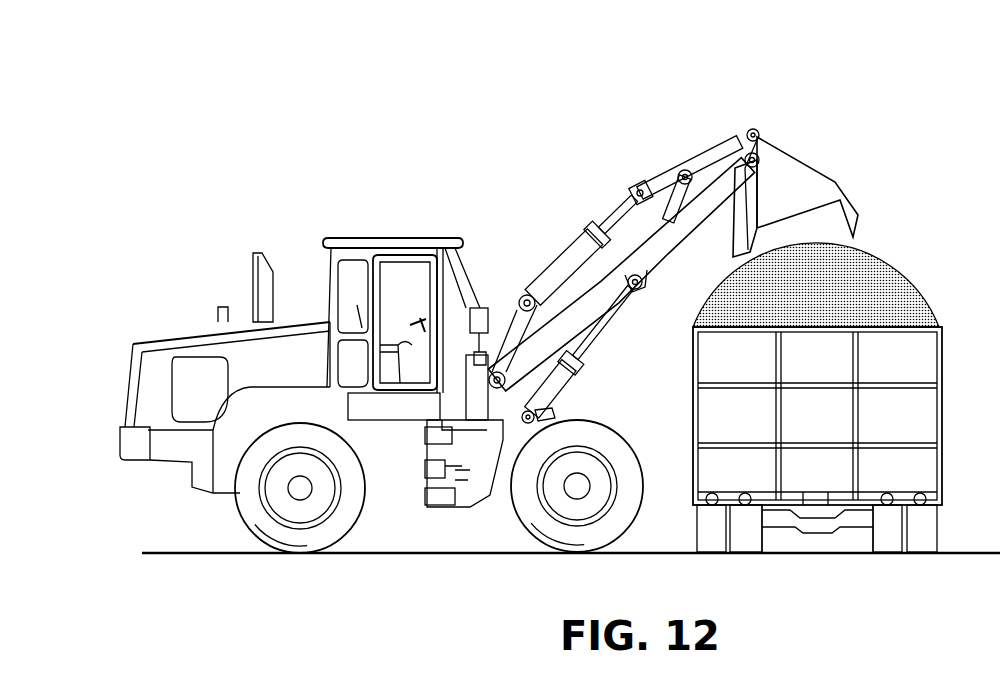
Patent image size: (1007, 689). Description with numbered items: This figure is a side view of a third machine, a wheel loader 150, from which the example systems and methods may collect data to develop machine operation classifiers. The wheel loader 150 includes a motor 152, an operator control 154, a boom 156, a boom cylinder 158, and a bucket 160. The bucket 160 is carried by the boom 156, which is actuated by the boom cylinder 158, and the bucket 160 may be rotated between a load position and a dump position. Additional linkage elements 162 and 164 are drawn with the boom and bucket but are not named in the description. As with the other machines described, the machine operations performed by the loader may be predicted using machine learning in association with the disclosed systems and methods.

The wheel loader 150 is at (583, 63).
The motor 152 is at (205, 322).
The operator control 154 is at (417, 327).
The boom 156 is at (673, 282).
The boom cylinder 158 is at (566, 379).
The bucket 160 is at (798, 153).
The tilt link 162 is at (697, 155).
The lift cylinder 164 is at (587, 232).